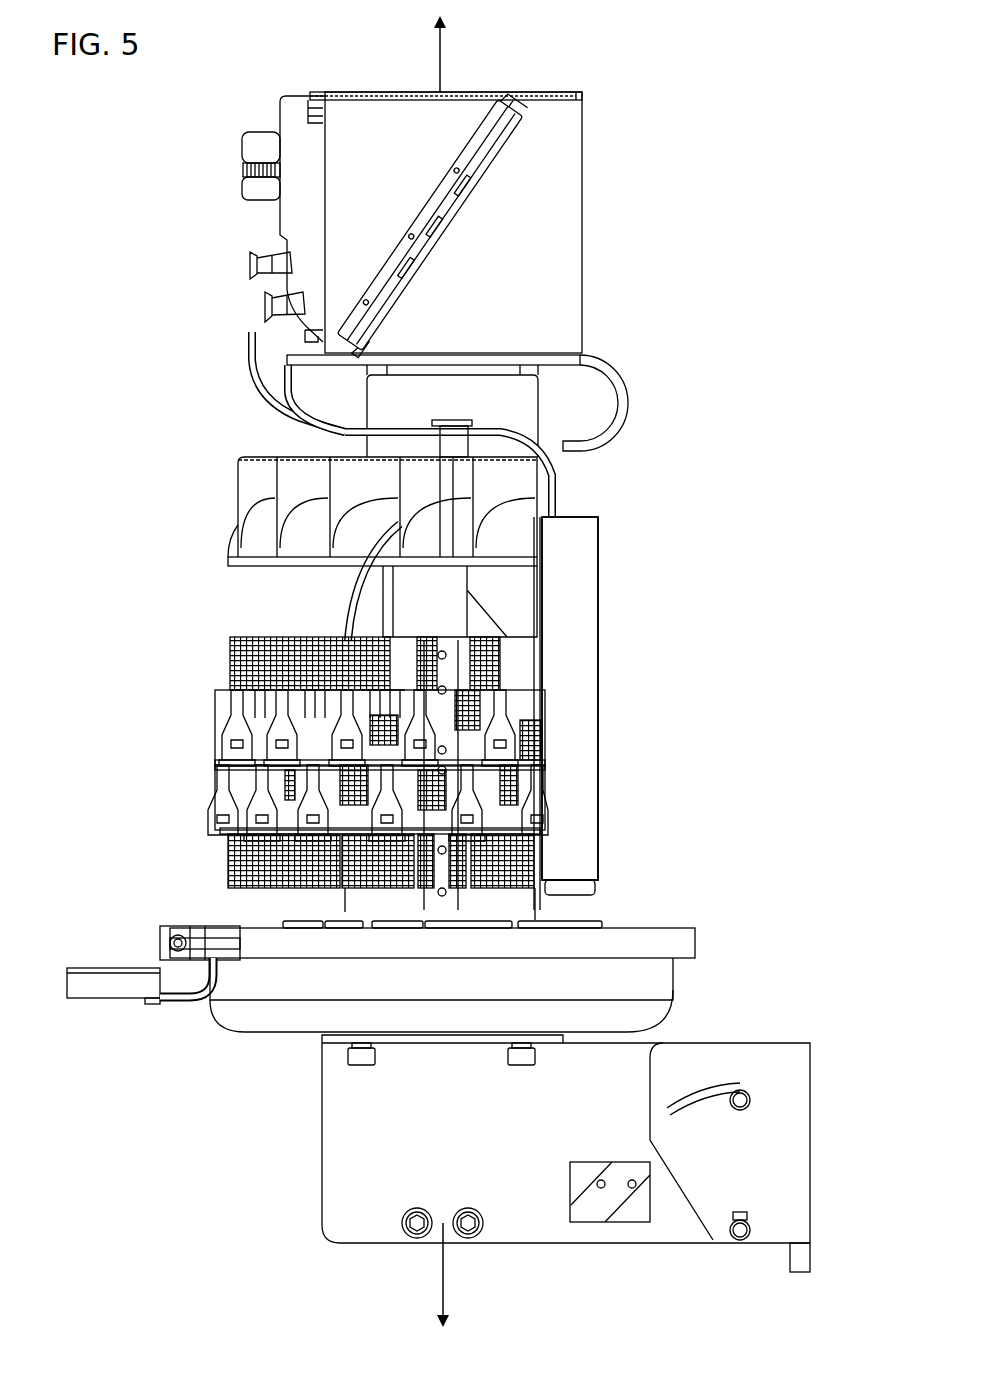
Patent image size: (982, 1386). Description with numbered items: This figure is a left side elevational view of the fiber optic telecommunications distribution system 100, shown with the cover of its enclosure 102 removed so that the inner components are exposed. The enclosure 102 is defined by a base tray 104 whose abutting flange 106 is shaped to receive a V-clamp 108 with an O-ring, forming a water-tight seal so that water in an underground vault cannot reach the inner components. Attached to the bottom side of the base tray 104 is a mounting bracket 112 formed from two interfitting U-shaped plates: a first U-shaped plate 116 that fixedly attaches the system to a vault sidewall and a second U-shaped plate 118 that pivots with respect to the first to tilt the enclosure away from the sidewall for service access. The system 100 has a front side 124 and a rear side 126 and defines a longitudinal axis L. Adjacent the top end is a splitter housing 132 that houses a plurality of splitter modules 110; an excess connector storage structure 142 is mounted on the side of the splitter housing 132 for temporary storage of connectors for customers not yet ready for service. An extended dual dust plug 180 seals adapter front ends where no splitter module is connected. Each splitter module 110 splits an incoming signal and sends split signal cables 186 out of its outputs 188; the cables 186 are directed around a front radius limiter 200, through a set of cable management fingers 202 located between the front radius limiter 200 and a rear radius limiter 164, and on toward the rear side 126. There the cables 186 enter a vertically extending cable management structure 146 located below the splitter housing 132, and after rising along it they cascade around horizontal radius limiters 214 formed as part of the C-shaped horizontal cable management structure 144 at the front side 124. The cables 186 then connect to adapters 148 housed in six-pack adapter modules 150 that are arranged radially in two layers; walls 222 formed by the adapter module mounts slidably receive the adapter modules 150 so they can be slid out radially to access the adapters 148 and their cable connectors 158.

The fiber optic telecommunications distribution system 100 is at (740, 196).
The enclosure 102 is at (655, 1012).
The base tray 104 is at (663, 975).
The abutting flange 106 is at (683, 938).
The V-clamp 108 is at (165, 935).
The splitter module 110 is at (310, 207).
The mounting bracket 112 is at (347, 1155).
The first U-shaped plate 116 is at (800, 1152).
The second U-shaped plate 118 is at (523, 1232).
The front side 124 is at (228, 540).
The rear side 126 is at (596, 595).
The splitter housing 132 is at (571, 265).
The excess connector storage structure 142 is at (468, 190).
The horizontal cable management structure 144 is at (515, 483).
The vertically extending cable management structure 146 is at (586, 630).
The adapter 148 is at (258, 712).
The six-pack adapter module 150 is at (545, 790).
The connector 158 is at (245, 775).
The rear radius limiter 164 is at (628, 382).
The extended dual dust plug 180 is at (258, 190).
The split signal cable 186 is at (498, 436).
The output 188 is at (265, 308).
The front radius limiter 200 is at (300, 400).
The cable management fingers 202 is at (462, 405).
The horizontal radius limiter 214 is at (248, 482).
The guide wall 222 is at (482, 735).